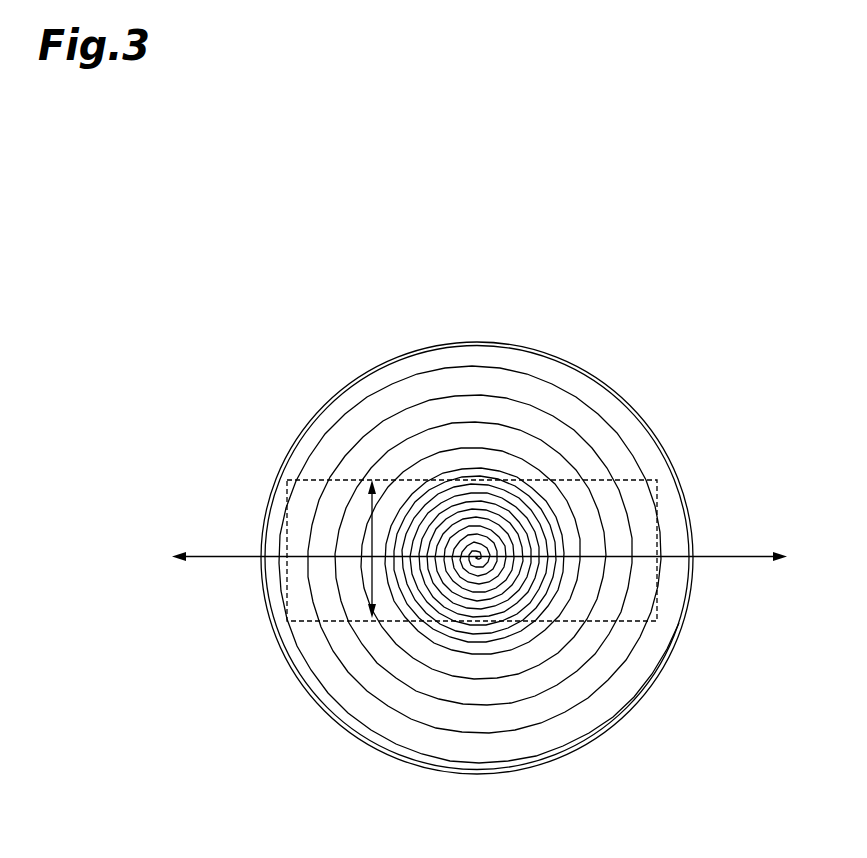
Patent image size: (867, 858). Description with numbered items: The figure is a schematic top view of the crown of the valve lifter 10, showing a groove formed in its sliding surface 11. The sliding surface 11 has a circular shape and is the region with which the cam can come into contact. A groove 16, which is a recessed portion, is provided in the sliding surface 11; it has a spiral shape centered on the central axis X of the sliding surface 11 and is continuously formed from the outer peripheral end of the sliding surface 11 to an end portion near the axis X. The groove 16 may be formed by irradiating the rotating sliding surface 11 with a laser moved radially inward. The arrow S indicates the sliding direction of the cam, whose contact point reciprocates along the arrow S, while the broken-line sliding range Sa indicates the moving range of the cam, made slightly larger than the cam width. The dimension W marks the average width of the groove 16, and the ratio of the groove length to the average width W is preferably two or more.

The valve lifter 10 is at (631, 279).
The sliding surface 11 is at (430, 393).
The groove 16 is at (470, 707).
The sliding range Sa is at (613, 625).
The arrow S (sliding direction) S is at (740, 556).
The average width of the groove W is at (372, 525).
The central axis X is at (477, 557).